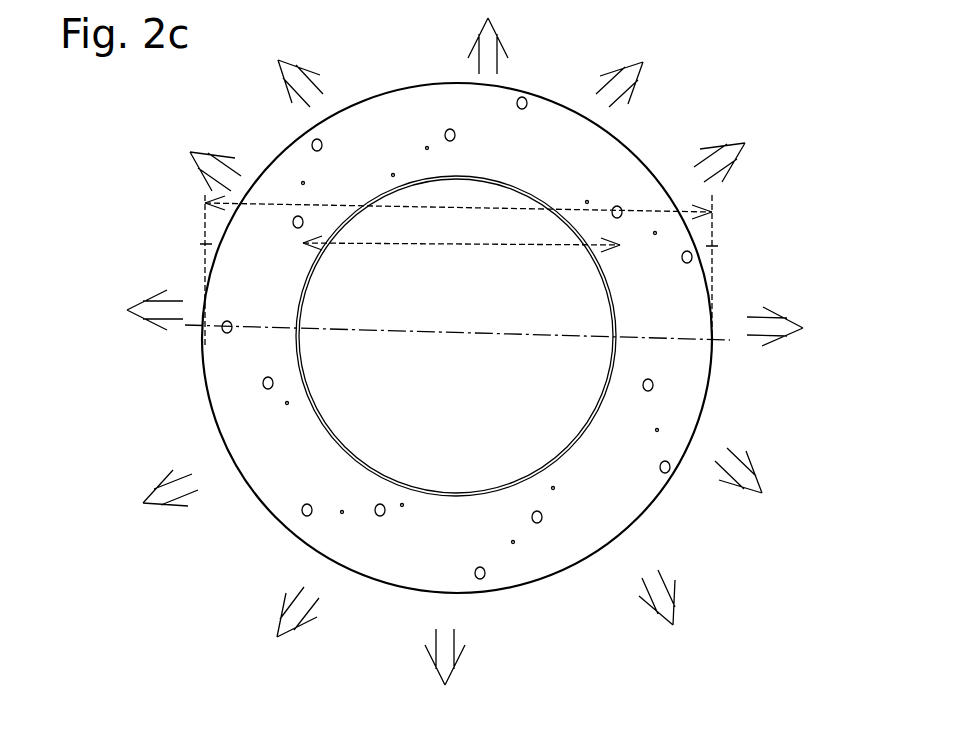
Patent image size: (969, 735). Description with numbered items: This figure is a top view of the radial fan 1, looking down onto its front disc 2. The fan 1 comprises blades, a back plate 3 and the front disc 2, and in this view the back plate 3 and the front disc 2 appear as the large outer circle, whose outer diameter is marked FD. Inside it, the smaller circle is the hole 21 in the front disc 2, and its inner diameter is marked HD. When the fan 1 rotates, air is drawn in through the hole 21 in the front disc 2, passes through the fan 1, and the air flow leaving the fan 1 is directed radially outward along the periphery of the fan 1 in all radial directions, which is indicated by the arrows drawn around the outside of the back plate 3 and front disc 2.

The fan 1 is at (465, 347).
The front disc 2 is at (663, 410).
The back plate 3 is at (432, 373).
The hole 21 is at (553, 448).